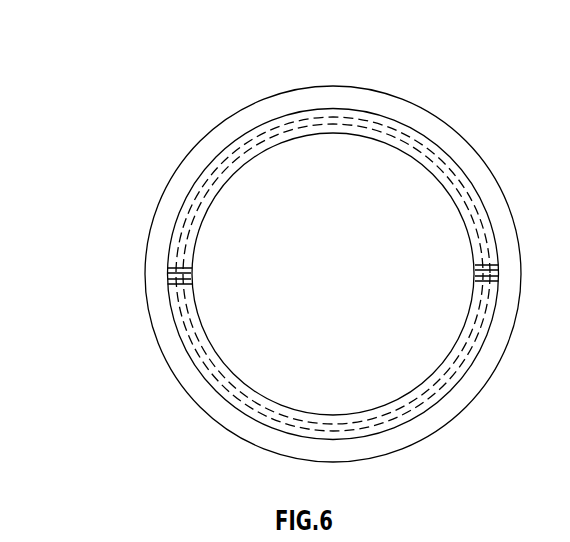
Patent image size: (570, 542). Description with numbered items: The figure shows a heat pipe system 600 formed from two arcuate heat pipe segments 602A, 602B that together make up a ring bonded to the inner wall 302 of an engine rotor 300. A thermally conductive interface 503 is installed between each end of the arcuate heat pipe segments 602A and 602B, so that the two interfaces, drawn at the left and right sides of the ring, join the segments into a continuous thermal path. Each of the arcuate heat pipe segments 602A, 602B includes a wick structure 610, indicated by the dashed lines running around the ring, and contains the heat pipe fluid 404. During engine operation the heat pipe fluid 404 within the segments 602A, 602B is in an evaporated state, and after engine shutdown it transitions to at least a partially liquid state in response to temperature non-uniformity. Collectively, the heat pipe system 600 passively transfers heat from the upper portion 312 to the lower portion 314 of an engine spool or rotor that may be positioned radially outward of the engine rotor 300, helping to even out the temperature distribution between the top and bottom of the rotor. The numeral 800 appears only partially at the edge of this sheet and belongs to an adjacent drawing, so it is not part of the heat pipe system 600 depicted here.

The engine rotor 300 is at (421, 107).
The inner wall 302 is at (299, 109).
The upper portion 312 is at (333, 79).
The lower portion 314 is at (326, 467).
The heat pipe fluid 404 is at (188, 265).
The thermally conductive interface 503 is at (174, 277).
The heat pipe system 600 is at (348, 164).
The arcuate heat pipe segment 602A is at (193, 185).
The arcuate heat pipe segment 602B is at (269, 401).
The wick structure 610 is at (437, 155).
The adjacent figure reference (partial) 800 is at (546, 540).